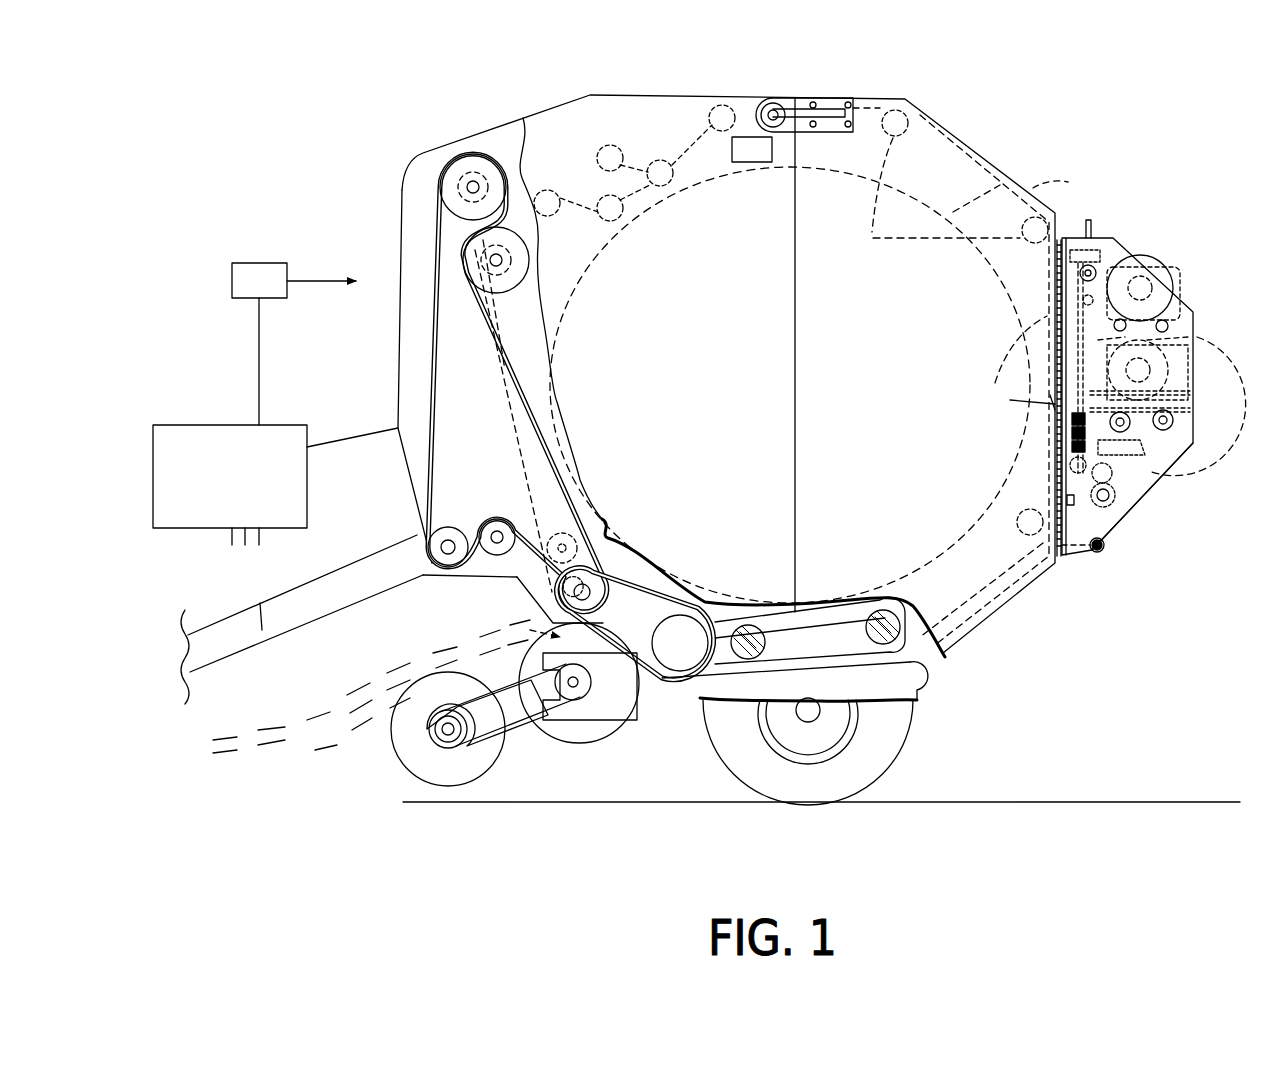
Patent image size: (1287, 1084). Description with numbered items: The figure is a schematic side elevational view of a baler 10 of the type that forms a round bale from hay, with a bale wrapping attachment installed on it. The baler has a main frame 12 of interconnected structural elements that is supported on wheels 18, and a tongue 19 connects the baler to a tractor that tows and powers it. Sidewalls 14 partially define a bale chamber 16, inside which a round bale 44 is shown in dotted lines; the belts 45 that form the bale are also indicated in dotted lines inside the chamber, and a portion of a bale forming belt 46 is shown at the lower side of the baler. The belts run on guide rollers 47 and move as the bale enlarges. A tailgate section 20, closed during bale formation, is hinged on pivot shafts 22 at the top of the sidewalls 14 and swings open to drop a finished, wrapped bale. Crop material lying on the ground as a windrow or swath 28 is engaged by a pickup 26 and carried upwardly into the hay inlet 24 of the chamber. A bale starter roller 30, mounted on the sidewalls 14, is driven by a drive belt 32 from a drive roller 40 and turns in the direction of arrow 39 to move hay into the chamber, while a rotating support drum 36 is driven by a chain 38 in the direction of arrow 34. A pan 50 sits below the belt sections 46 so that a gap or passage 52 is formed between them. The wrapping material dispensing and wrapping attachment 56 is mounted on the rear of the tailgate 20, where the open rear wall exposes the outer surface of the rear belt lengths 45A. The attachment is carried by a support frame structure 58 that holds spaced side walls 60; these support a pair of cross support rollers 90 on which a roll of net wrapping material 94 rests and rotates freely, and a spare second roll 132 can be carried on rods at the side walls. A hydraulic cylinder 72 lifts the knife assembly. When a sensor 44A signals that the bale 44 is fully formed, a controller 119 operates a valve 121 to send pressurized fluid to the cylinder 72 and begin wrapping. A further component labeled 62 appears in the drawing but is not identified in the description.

The baler 10 is at (390, 386).
The main frame 12 is at (335, 622).
The sidewalls 14 is at (552, 132).
The bale chamber 16 is at (680, 218).
The wheels 18 is at (795, 800).
The tongue 19 is at (259, 625).
The tailgate section 20 is at (840, 100).
The pivot shafts 22 is at (768, 103).
The hay inlet 24 is at (633, 586).
The pickup 26 is at (478, 790).
The windrow or swath 28 is at (327, 730).
The bale starter roller 30 is at (498, 522).
The drive belt 32 is at (545, 392).
The arrow 34 is at (690, 668).
The rotating support drum 36 is at (672, 660).
The chain 38 is at (662, 592).
The arrow 39 is at (545, 623).
The drive roller 40 is at (410, 545).
The round bale 44 is at (997, 170).
The sensor 44A is at (735, 165).
The belts 45 is at (1064, 180).
The exposed outer surface of rear lengths of bale forming belt 45A is at (1011, 360).
The bale forming belt portion 46 is at (820, 635).
The guide rollers 47 is at (910, 624).
The pan 50 is at (895, 710).
The gap or passage 52 is at (945, 650).
The wrapping material dispensing and wrapping attachment 56 is at (1184, 299).
The support frame structure 58 is at (1052, 402).
The side walls 60 is at (1143, 477).
The drive roller 62 is at (735, 690).
The hydraulic cylinder 72 is at (1228, 348).
The cross support rollers 90 is at (1178, 470).
The roll of net wrapping material 94 is at (1170, 391).
The controller 119 is at (210, 425).
The valve 121 is at (232, 281).
The second roll of wrapping material 132 is at (1140, 255).